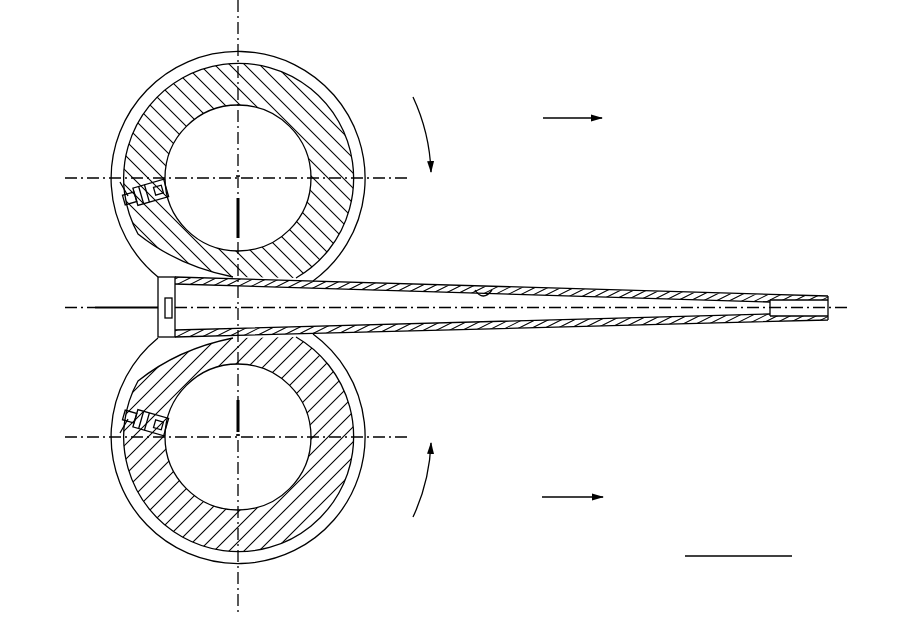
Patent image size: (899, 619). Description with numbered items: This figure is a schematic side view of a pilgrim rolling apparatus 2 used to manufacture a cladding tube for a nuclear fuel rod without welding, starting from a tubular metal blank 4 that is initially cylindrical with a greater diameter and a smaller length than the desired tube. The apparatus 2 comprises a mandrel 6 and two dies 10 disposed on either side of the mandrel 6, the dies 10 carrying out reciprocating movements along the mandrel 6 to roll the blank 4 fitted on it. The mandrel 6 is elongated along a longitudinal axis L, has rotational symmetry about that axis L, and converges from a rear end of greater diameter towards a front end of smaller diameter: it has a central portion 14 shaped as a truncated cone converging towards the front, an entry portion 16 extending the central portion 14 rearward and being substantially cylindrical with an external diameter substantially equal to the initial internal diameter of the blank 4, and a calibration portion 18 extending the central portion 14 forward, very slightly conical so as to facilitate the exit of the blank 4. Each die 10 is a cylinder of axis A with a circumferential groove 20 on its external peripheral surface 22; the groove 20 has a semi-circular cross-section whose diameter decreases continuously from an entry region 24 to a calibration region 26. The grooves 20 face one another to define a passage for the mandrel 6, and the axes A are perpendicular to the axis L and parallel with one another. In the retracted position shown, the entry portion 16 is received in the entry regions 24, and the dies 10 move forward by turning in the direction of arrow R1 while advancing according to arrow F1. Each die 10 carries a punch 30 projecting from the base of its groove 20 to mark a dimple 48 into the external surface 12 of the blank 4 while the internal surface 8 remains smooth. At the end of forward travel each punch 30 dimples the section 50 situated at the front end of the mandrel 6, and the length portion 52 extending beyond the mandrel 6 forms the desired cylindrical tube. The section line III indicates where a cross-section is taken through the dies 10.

The pilgrim rolling apparatus 2 is at (570, 66).
The tubular metal blank 4 is at (542, 284).
The mandrel 6 is at (410, 310).
The internal surface 8 is at (488, 290).
The die 10 is at (343, 83).
The external surface 12 is at (638, 291).
The central portion 14 is at (477, 318).
The entry portion 16 is at (160, 323).
The calibration portion 18 is at (780, 311).
The circumferential groove 20 is at (263, 60).
The external peripheral surface 22 is at (305, 68).
The entry region 24 is at (325, 260).
The calibration region 26 is at (118, 200).
The punch 30 is at (120, 182).
The dimple 48 is at (770, 296).
The section 50 is at (748, 324).
The length portion 52 is at (818, 323).
The axis A is at (238, 178).
The longitudinal axis L is at (464, 308).
The section line III is at (236, 216).
The arrow R1 is at (436, 326).
The arrow F1 is at (572, 295).